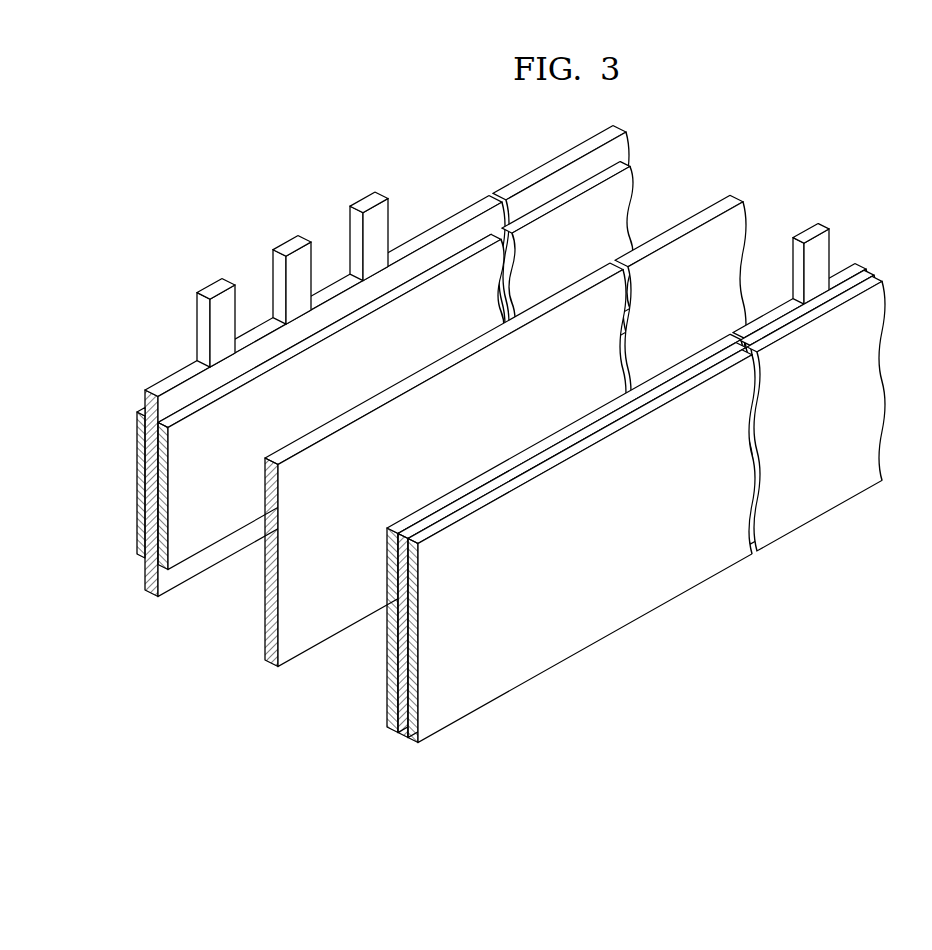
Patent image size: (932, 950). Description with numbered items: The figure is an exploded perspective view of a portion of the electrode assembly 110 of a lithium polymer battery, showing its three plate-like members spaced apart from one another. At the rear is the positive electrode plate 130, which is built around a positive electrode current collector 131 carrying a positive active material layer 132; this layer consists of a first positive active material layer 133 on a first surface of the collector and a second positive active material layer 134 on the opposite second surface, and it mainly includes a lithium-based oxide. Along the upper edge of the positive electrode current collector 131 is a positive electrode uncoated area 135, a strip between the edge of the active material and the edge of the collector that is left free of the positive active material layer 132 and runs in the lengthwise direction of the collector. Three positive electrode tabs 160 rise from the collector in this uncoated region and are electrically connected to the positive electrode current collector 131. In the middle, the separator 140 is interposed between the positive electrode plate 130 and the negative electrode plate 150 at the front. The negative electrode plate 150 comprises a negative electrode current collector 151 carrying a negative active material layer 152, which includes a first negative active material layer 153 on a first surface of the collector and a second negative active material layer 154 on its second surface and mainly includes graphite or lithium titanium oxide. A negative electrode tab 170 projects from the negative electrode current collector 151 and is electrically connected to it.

The electrode assembly 110 is at (266, 189).
The positive electrode plate 130 is at (108, 530).
The positive electrode current collector 131 is at (177, 378).
The positive active material layer 132 is at (107, 640).
The first positive active material layer 133 is at (163, 570).
The second positive active material layer 134 is at (137, 556).
The positive electrode uncoated area 135 is at (340, 306).
The positive electrode tab 160 is at (297, 257).
The separator 140 is at (251, 677).
The negative electrode plate 150 is at (370, 749).
The negative electrode current collector 151 is at (395, 672).
The negative active material layer 152 is at (358, 811).
The first negative active material layer 153 is at (388, 730).
The second negative active material layer 154 is at (412, 744).
The negative electrode tab 170 is at (823, 253).